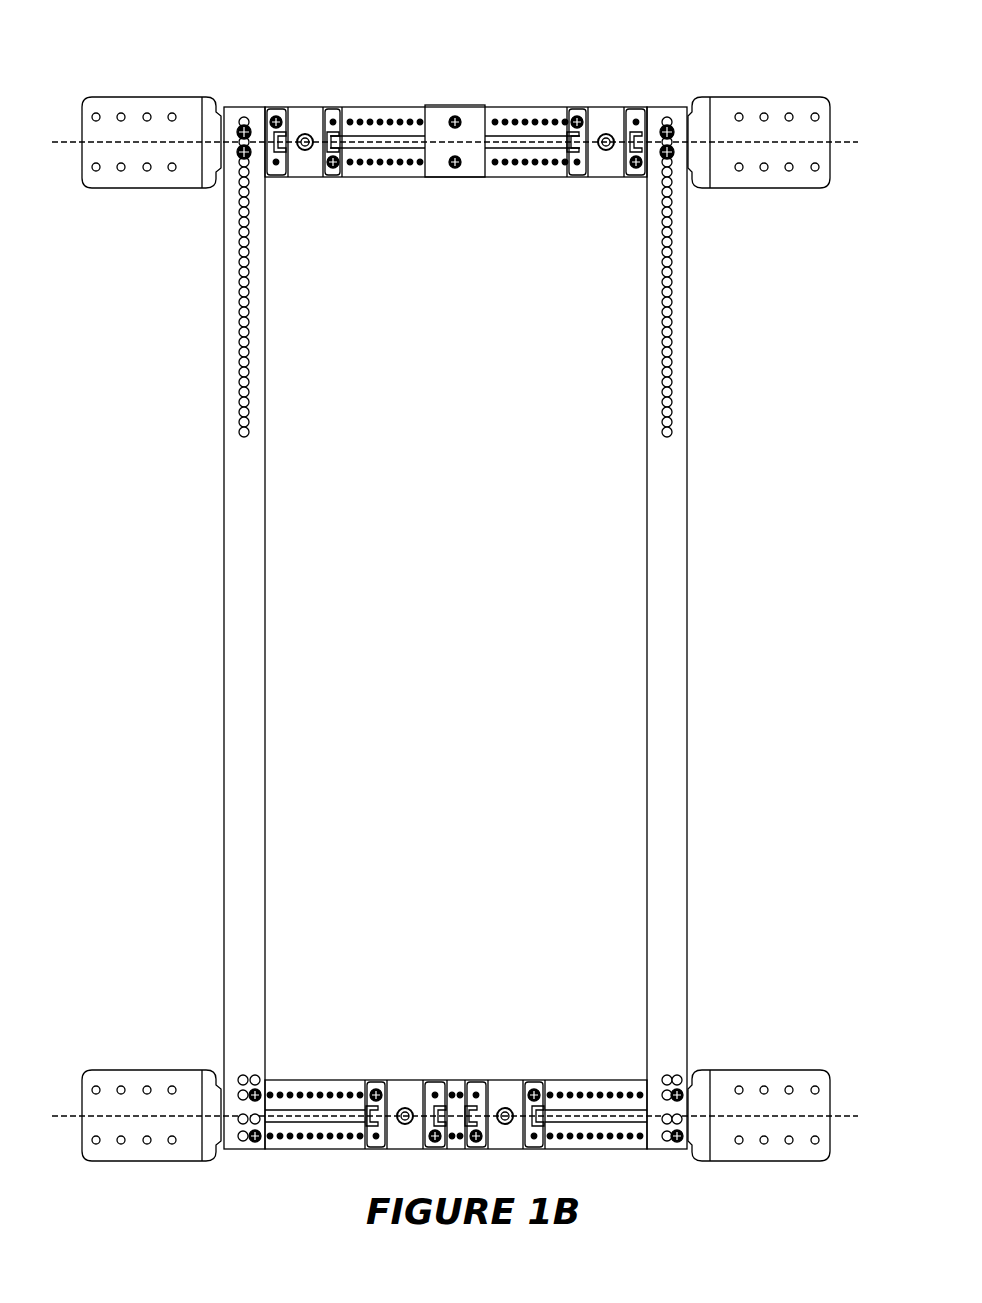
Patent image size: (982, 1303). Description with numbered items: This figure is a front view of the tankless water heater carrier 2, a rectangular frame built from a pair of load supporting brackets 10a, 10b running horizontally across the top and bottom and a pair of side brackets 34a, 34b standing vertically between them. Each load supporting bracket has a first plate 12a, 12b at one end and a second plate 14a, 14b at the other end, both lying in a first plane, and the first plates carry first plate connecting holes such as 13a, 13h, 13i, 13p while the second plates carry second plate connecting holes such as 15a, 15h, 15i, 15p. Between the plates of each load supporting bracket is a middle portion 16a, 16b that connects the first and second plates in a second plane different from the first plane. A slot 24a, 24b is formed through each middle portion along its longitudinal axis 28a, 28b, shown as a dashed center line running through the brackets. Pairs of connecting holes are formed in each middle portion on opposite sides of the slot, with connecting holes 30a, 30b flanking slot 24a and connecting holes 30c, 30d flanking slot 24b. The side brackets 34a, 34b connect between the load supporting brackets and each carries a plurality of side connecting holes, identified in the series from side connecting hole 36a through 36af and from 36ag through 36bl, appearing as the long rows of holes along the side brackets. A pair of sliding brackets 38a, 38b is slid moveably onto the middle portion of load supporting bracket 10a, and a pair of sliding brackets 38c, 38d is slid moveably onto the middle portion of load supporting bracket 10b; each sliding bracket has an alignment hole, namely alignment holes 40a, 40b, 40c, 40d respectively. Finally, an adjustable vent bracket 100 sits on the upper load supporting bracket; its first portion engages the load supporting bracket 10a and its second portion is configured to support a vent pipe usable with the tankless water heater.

The tankless water heater carrier 2 is at (861, 93).
The load supporting bracket 10a is at (549, 190).
The load supporting bracket 10b is at (592, 1058).
The first plate 12a is at (82, 150).
The first plate 12b is at (82, 1126).
The first plate connecting hole 13a is at (96, 113).
The first plate connecting hole 13h is at (172, 171).
The first plate connecting hole 13i is at (96, 1086).
The first plate connecting hole 13p is at (172, 1145).
The second plate 14a is at (831, 150).
The second plate 14b is at (831, 1128).
The second plate connecting hole 15a is at (739, 113).
The second plate connecting hole 15h is at (815, 171).
The second plate connecting hole 15i is at (739, 1086).
The second plate connecting hole 15p is at (815, 1145).
The middle portion 16a is at (530, 112).
The middle portion 16b is at (565, 1090).
The slot 24a is at (405, 138).
The slot 24b is at (335, 1110).
The longitudinal axis 28a is at (86, 142).
The longitudinal axis 28b is at (86, 1116).
The connecting hole 30a is at (345, 118).
The connecting hole 30b is at (348, 166).
The connecting hole 30c is at (272, 1092).
The connecting hole 30d is at (270, 1148).
The side bracket 34a is at (224, 545).
The side bracket 34b is at (687, 545).
The side connecting hole 36a is at (244, 116).
The side connecting hole 36af is at (244, 434).
The side connecting hole 36ag is at (668, 115).
The side connecting hole 36bl is at (668, 434).
The sliding bracket 38a is at (302, 118).
The sliding bracket 38b is at (605, 118).
The sliding bracket 38c is at (404, 1090).
The sliding bracket 38d is at (508, 1090).
The alignment hole 40a is at (306, 150).
The alignment hole 40b is at (607, 150).
The alignment hole 40c is at (405, 1124).
The alignment hole 40d is at (506, 1124).
The adjustable vent bracket 100 is at (450, 105).